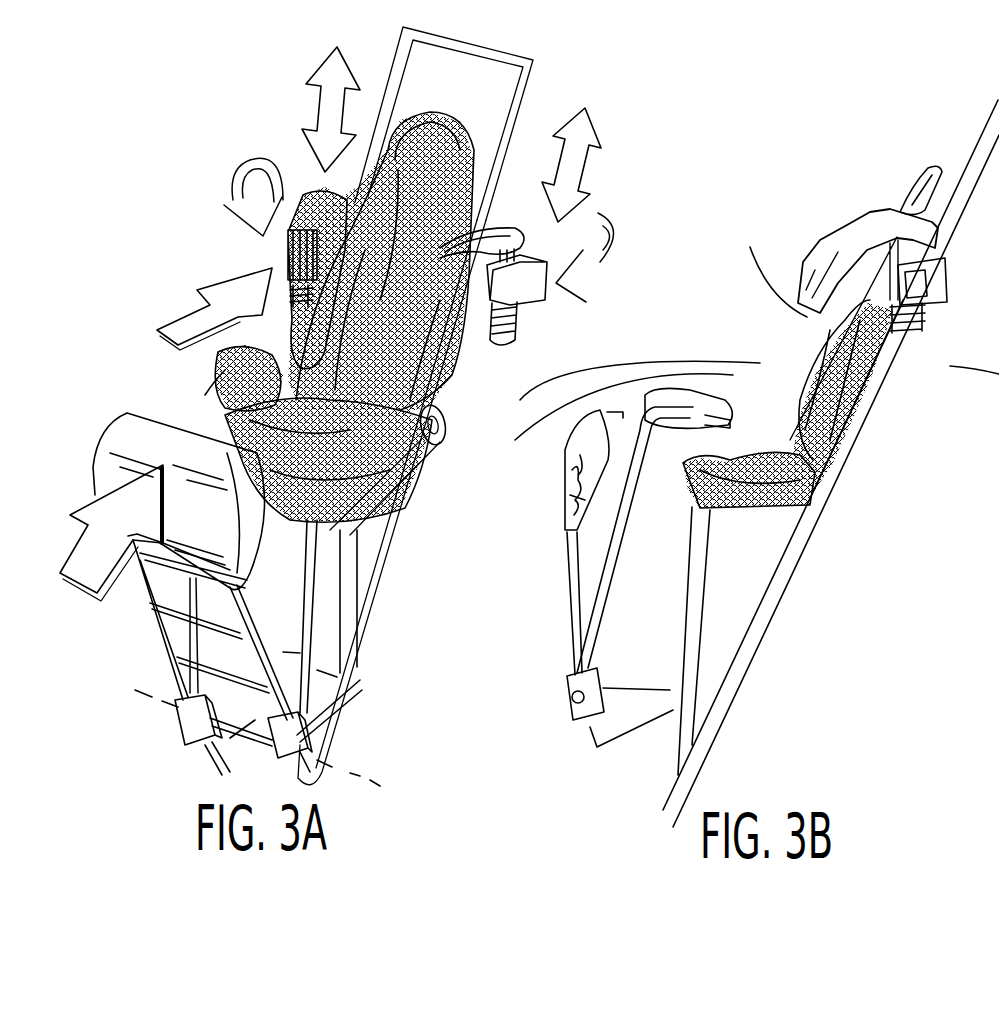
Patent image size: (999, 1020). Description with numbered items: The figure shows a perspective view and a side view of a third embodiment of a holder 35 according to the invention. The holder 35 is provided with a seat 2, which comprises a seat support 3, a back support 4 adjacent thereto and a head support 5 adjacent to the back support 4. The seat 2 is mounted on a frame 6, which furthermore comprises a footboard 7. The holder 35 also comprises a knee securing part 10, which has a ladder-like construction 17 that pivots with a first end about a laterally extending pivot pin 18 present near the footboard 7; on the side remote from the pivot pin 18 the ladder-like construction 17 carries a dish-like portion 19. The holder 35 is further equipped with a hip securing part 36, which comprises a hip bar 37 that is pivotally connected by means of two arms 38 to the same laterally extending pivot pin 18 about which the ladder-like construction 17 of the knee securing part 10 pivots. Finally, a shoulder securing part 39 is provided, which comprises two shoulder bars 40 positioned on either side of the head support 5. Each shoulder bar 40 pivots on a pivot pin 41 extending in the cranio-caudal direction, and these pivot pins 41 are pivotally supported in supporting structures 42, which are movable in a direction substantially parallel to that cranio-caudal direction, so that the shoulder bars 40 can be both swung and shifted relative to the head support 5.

In FIG. 3A, the seat 2 is at (462, 448).
In FIG. 3A, the seat support 3 is at (385, 522).
In FIG. 3B, the seat support 3 is at (752, 495).
In FIG. 3A, the back support 4 is at (460, 385).
In FIG. 3B, the back support 4 is at (857, 388).
In FIG. 3A, the head support 5 is at (447, 117).
In FIG. 3B, the head support 5 is at (922, 180).
In FIG. 3A, the frame 6 is at (387, 583).
In FIG. 3A, the footboard 7 is at (320, 697).
In FIG. 3A, the knee securing part 10 is at (122, 624).
In FIG. 3A, the ladder-like construction 17 is at (160, 647).
In FIG. 3B, the ladder-like construction 17 is at (572, 587).
In FIG. 3A, the pivot pin 18 is at (363, 773).
In FIG. 3B, the pivot pin 18 is at (567, 697).
In FIG. 3A, the dish-like portion 19 is at (135, 442).
In FIG. 3B, the dish-like portion 19 is at (580, 458).
In FIG. 3A, the holder 35 is at (236, 152).
In FIG. 3A, the hip securing part 36 is at (190, 393).
In FIG. 3A, the hip bar 37 is at (222, 372).
In FIG. 3B, the hip bar 37 is at (707, 403).
In FIG. 3A, the arms 38 is at (307, 680).
In FIG. 3B, the arms 38 is at (617, 540).
In FIG. 3A, the shoulder securing part 39 is at (513, 220).
In FIG. 3A, the shoulder bars 40 is at (285, 265).
In FIG. 3B, the shoulder bars 40 is at (837, 240).
In FIG. 3A, the pivot pins 41 is at (520, 328).
In FIG. 3B, the pivot pins 41 is at (913, 320).
In FIG. 3A, the supporting structures 42 is at (553, 273).
In FIG. 3B, the supporting structures 42 is at (938, 278).